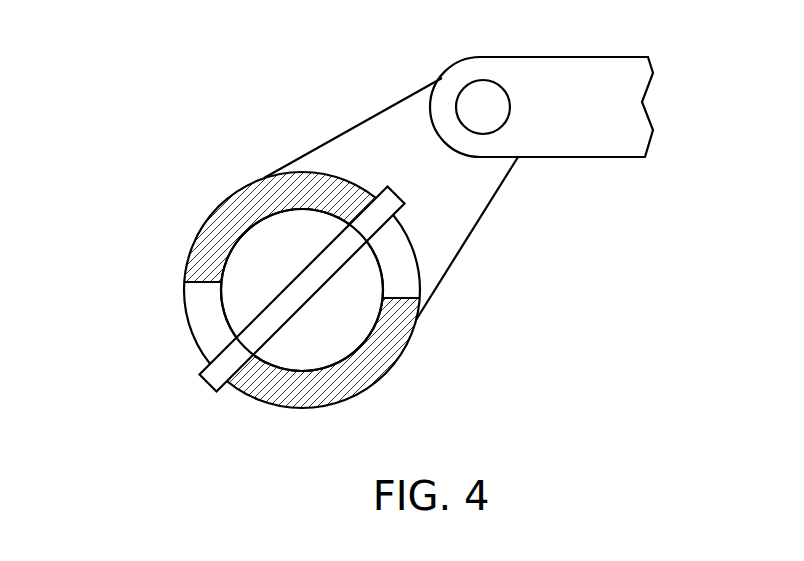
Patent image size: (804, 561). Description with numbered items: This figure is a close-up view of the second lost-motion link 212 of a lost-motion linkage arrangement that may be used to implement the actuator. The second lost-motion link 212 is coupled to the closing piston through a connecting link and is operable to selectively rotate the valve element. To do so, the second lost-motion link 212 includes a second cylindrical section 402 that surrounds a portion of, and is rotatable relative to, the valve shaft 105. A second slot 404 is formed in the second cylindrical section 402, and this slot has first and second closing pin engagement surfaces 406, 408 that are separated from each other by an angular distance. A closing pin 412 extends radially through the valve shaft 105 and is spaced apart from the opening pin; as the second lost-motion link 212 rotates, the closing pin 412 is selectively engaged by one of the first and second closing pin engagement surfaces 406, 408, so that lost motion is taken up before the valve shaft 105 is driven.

The second lost-motion link 212 is at (150, 98).
The second cylindrical section 402 is at (228, 196).
The second slot 404 is at (417, 249).
The first closing pin engagement surface 406 is at (372, 192).
The second closing pin engagement surface 408 is at (417, 297).
The closing pin 412 is at (206, 365).
The valve shaft 105 is at (350, 342).